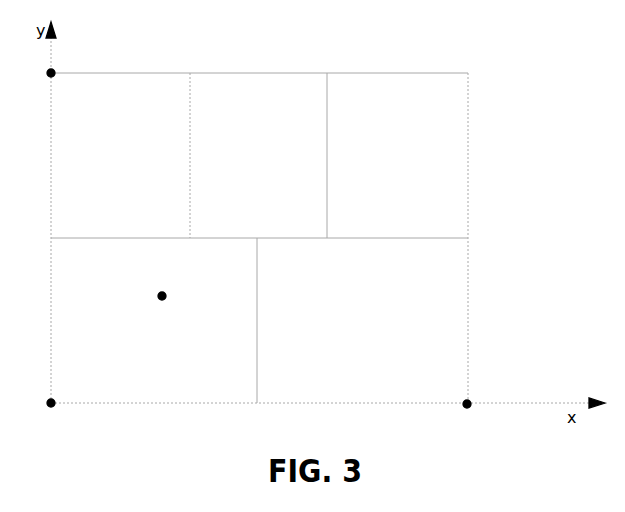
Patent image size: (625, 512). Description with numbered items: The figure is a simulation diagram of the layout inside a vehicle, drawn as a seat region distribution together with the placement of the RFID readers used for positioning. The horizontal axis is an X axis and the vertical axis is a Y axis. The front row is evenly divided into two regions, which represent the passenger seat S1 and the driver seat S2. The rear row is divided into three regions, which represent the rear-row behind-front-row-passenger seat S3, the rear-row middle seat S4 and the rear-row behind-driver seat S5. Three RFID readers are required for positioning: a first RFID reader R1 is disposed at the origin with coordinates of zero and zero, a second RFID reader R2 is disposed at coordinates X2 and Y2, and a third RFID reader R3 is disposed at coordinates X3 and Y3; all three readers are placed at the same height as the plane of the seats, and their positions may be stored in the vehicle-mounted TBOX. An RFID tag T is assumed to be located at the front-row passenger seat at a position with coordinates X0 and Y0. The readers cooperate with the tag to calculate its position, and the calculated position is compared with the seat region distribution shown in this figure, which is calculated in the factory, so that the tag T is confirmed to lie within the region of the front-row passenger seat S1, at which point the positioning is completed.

The passenger seat S1 is at (199, 320).
The driver seat S2 is at (362, 320).
The rear-row behind-front-row-passenger seat S3 is at (151, 155).
The rear-row middle seat S4 is at (289, 155).
The rear-row behind-driver seat S5 is at (397, 155).
The RFID reader R1 is at (41, 415).
The RFID reader R2 is at (510, 395).
The RFID reader R3 is at (92, 62).
The RFID tag T is at (184, 285).